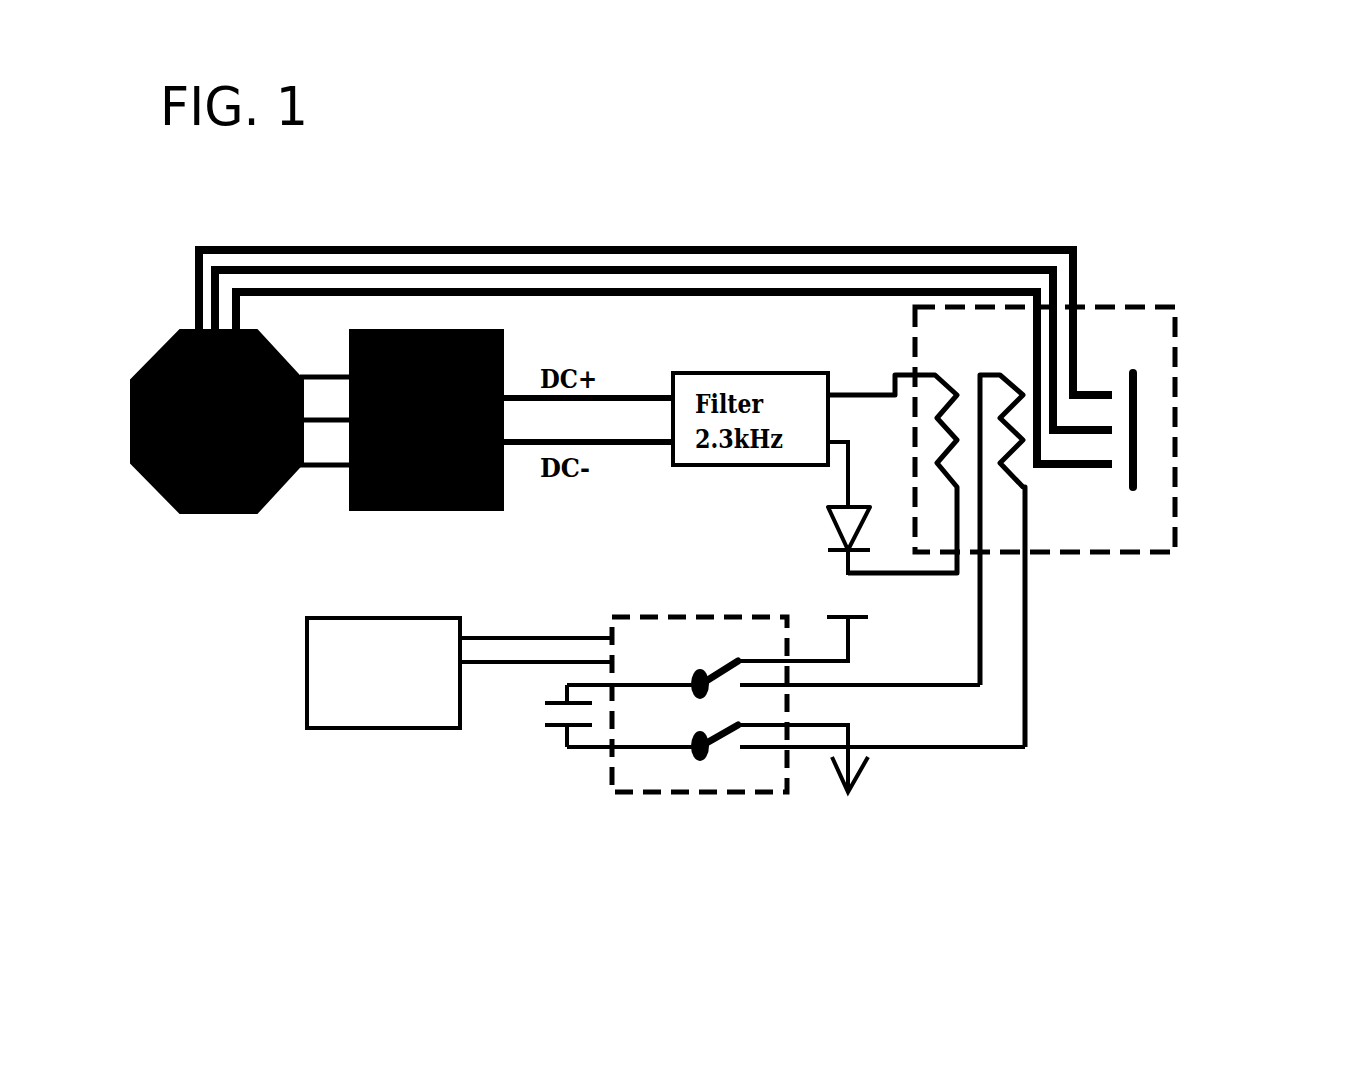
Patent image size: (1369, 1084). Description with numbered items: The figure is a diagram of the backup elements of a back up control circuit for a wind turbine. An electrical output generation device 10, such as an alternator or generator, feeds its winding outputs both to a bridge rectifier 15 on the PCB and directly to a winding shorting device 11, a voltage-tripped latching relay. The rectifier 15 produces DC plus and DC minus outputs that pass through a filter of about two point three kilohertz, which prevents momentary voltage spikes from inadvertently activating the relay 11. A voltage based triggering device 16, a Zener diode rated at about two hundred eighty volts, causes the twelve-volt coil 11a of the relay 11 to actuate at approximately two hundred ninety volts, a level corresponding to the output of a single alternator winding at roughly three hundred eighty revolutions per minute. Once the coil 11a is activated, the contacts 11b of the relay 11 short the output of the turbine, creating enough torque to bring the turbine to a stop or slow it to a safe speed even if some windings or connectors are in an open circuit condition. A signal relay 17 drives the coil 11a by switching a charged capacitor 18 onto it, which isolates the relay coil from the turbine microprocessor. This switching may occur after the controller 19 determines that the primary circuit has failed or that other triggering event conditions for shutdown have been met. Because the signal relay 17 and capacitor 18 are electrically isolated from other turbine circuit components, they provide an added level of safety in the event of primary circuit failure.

The electrical output generation device 10 is at (157, 358).
The winding shorting device 11 is at (1182, 343).
The coil 11a is at (1050, 515).
The contacts 11b is at (1115, 352).
The bridge rectifier 15 is at (428, 511).
The voltage based triggering device 16 is at (728, 553).
The signal relay 17 is at (765, 795).
The capacitor 18 is at (550, 748).
The controller 19 is at (337, 730).